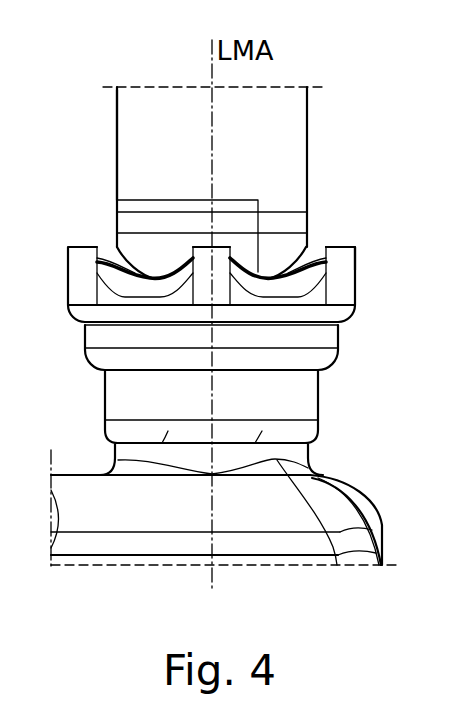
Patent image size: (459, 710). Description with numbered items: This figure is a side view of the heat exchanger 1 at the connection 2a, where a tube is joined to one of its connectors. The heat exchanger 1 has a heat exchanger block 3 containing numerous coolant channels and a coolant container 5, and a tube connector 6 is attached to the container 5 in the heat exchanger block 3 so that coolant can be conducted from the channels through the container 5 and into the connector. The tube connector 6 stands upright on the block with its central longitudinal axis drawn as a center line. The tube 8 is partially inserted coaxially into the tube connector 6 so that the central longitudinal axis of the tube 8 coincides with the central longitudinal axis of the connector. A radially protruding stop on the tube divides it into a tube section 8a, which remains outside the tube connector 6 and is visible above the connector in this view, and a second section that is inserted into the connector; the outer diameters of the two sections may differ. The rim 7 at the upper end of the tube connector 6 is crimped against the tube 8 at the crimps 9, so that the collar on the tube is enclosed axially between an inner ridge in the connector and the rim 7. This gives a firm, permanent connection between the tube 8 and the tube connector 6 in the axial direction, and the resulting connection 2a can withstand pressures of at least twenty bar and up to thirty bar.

The heat exchanger 1 is at (341, 99).
The tube 8 is at (290, 150).
The tube section 8a is at (130, 117).
The crimp 9 is at (128, 273).
The connection 2a is at (357, 227).
The rim 7 is at (342, 247).
The tube connector 6 is at (366, 283).
The coolant container 5 is at (333, 503).
The heat exchanger block 3 is at (392, 497).